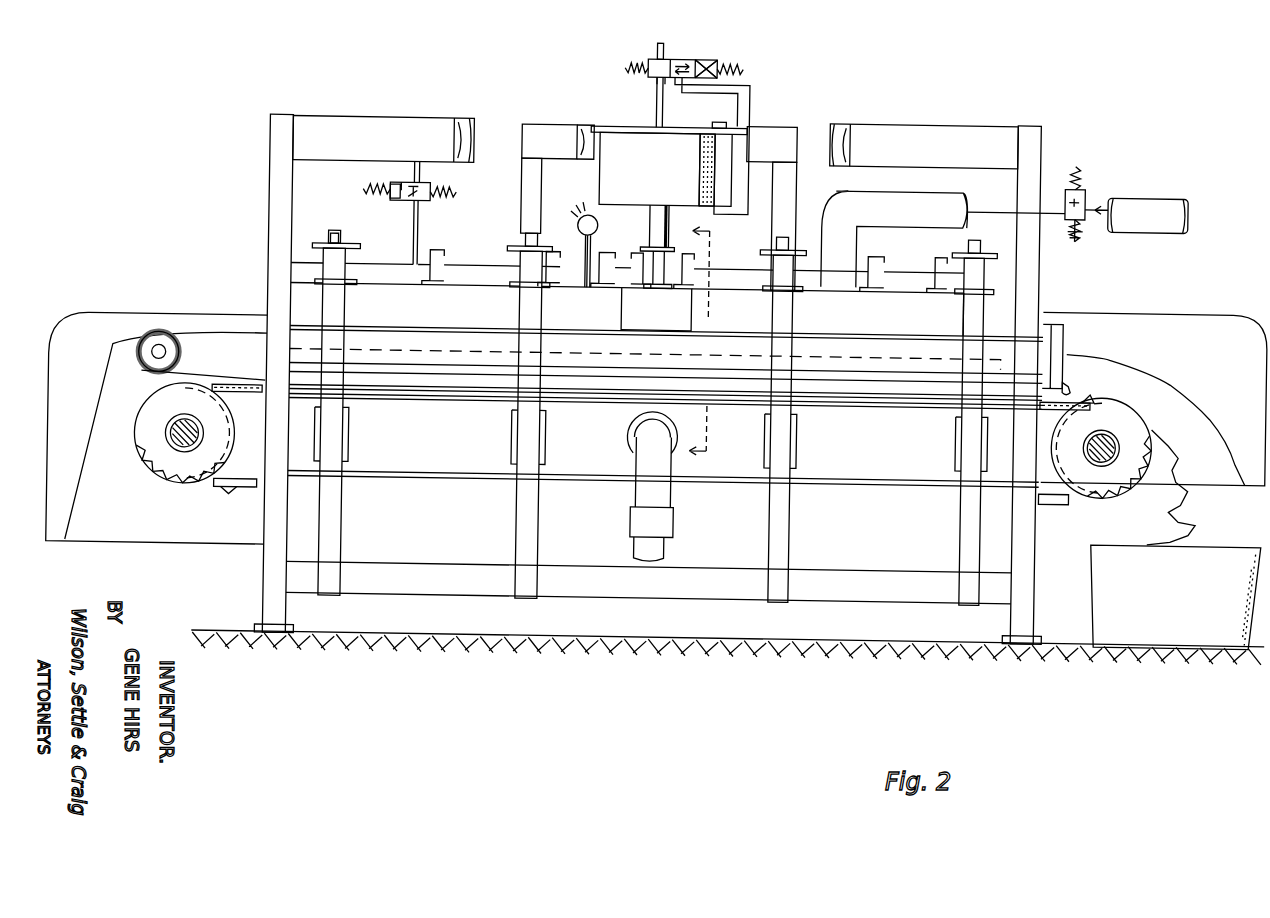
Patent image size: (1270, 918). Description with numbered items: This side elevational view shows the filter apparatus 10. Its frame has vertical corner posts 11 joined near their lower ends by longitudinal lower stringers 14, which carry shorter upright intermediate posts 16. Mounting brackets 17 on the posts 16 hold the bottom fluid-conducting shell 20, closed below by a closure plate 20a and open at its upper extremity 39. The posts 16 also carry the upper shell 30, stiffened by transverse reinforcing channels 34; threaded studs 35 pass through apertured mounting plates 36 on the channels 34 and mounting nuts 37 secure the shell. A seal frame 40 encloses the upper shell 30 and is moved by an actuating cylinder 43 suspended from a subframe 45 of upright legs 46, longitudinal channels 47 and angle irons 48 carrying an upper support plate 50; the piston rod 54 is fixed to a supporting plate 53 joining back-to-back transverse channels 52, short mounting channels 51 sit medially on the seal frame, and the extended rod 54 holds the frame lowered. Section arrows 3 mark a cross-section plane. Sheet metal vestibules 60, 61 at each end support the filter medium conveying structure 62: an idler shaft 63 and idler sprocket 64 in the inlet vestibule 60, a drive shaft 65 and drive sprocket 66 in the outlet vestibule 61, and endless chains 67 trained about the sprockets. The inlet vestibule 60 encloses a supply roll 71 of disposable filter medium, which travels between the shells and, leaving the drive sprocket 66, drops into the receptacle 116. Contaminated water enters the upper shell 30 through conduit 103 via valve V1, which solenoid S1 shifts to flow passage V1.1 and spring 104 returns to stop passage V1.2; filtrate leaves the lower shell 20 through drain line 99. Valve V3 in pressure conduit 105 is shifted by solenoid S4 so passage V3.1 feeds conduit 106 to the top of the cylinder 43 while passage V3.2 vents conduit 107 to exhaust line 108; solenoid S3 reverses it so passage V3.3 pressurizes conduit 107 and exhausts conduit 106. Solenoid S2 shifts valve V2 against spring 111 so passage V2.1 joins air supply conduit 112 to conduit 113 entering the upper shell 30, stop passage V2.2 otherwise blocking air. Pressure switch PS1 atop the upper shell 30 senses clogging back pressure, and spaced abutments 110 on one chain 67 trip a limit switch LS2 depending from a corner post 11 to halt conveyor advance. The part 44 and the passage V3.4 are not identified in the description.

The section line 3 is at (708, 343).
The filter apparatus 10 is at (803, 671).
The vertical corner posts 11 is at (266, 596).
The longitudinal lower stringers 14 is at (718, 604).
The upright intermediate posts 16 is at (343, 538).
The mounting brackets 17 is at (349, 444).
The bottom fluid-conducting shell 20 is at (441, 461).
The closure plate 20a is at (490, 482).
The upper shell 30 is at (858, 321).
The reinforcing channels 34 is at (356, 257).
The threaded studs 35 is at (333, 235).
The apertured mounting plates 36 is at (580, 238).
The mounting nuts 37 is at (328, 240).
The upper extremity of the lower shell 39 is at (428, 395).
The seal frame 40 is at (886, 329).
The actuating cylinder 43 is at (670, 152).
The plate 44 is at (718, 121).
The subframe 45 is at (772, 124).
The upright channels or legs 46 is at (518, 184).
The longitudinal channels 47 is at (528, 133).
The angle irons 48 is at (585, 138).
The upper support plate 50 is at (649, 169).
The mounting channels 51 is at (690, 322).
The transverse channels 52 is at (656, 309).
The supporting plate 53 is at (638, 249).
The piston rod 54 is at (647, 219).
The inlet vestibule 60 is at (647, 424).
The outlet vestibule 61 is at (1153, 413).
The filter medium conveying structure 62 is at (166, 460).
The idler shaft 63 is at (172, 447).
The idler sprocket 64 is at (160, 482).
The drive shaft 65 is at (1112, 443).
The drive sprocket 66 is at (1100, 489).
The endless chain 67 is at (250, 493).
The supply roll of filter medium 71 is at (180, 360).
The drain line 99 is at (632, 520).
The conduit 103 is at (920, 215).
The spring 104 is at (1078, 165).
The fluid pressure conduit 105 is at (652, 44).
The conduit 106 is at (652, 112).
The conduit 107 is at (711, 190).
The exhaust line 108 is at (698, 48).
The abutments 110 is at (230, 493).
The spring 111 is at (450, 200).
The air supply conduit 112 is at (411, 165).
The air passage conduit 113 is at (416, 232).
The receptacle 116 is at (1105, 594).
The limit switch LS2 is at (1070, 380).
The pressure switch PS1 is at (584, 214).
The solenoid S1 is at (1074, 236).
The solenoid S2 is at (360, 193).
The solenoid S3 is at (625, 65).
The solenoid S4 is at (748, 67).
The valve V1 is at (1109, 218).
The flow passage V1.1 is at (1080, 213).
The stop passage V1.2 is at (1082, 192).
The valve V2 is at (425, 186).
The valve passage V2.1 is at (408, 178).
The stop passage V2.2 is at (412, 200).
The valve V3 is at (698, 58).
The valve passage V3.1 is at (653, 80).
The valve passage V3.2 is at (665, 88).
The valve passage V3.3 is at (747, 88).
The valve port V3.4 is at (712, 62).